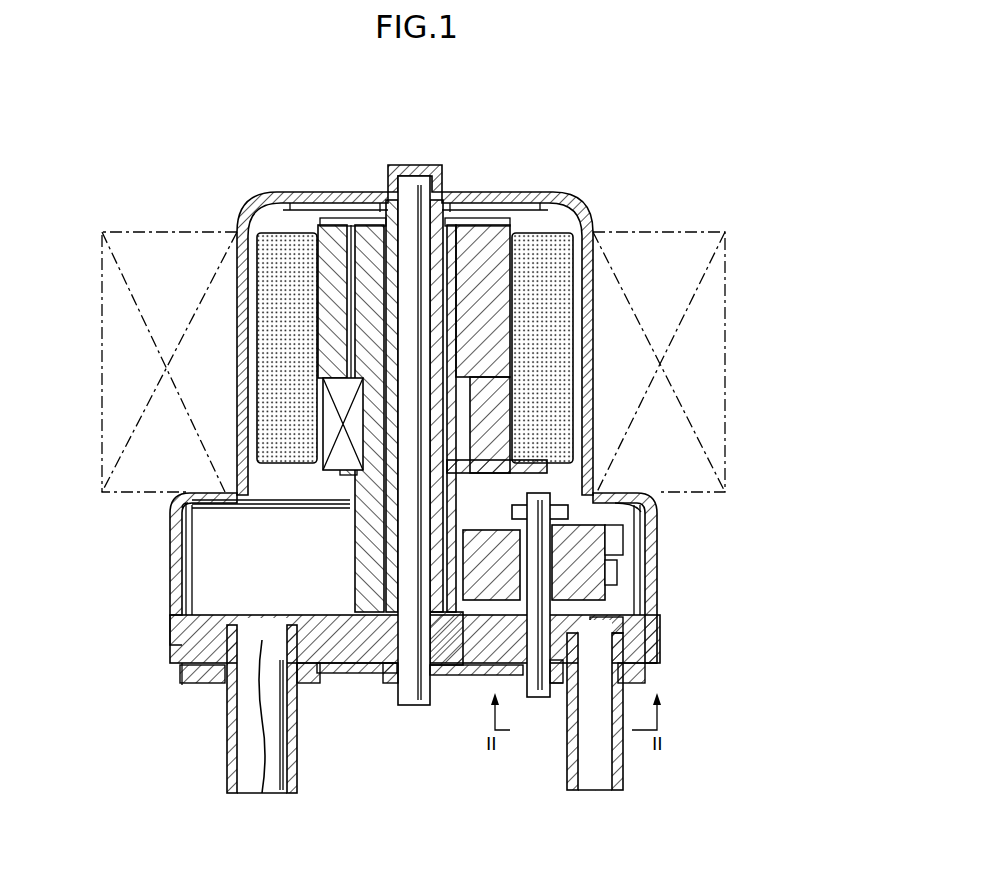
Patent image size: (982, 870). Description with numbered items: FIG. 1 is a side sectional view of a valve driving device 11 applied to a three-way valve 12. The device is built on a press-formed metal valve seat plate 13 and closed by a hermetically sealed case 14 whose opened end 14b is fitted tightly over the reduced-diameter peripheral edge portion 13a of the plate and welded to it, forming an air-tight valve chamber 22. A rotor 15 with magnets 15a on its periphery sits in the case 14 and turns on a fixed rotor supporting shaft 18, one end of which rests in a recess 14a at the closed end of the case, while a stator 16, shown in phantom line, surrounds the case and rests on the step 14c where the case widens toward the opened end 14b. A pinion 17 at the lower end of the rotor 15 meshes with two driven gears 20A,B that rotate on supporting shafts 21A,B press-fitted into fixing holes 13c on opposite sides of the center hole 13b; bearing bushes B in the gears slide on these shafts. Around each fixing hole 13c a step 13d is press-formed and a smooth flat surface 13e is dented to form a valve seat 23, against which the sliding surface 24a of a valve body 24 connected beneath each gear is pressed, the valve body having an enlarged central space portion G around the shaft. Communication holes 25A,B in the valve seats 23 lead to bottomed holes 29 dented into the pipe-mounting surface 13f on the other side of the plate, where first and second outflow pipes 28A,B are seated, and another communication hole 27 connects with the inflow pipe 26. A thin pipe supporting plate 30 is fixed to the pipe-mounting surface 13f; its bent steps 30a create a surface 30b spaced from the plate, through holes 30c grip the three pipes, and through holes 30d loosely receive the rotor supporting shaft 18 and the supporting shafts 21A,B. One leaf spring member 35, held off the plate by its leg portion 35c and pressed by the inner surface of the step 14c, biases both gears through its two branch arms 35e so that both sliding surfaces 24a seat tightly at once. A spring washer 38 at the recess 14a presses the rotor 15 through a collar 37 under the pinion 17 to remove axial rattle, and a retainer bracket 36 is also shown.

The valve driving device 11 is at (600, 207).
The three-way valve 12 is at (150, 668).
The valve seat plate 13 is at (258, 620).
The reduced-diameter peripheral edge portion 13a is at (173, 632).
The center hole 13b is at (383, 670).
The fixing holes 13c is at (557, 700).
The step 13d is at (657, 643).
The smooth flat surface 13e is at (612, 600).
The pipe-mounting surface 13f is at (200, 683).
The hermetically sealed case 14 is at (590, 310).
The recess 14a is at (380, 192).
The opened end 14b is at (173, 613).
The step 14c is at (630, 492).
The rotor 15 is at (513, 277).
The magnets 15a is at (255, 290).
The stator 16 is at (178, 230).
The pinion 17 is at (370, 553).
The rotor supporting shaft 18 is at (355, 378).
The driven gears 20A,B is at (565, 560).
The supporting shafts 21A,B is at (530, 500).
The air-tight valve chamber 22 is at (493, 487).
The valve seat 23 is at (548, 545).
The valve body 24 is at (428, 705).
The sliding surface 24a is at (475, 652).
The communication holes 25A,B is at (620, 612).
The inflow pipe 26 is at (227, 735).
The communication hole 27 is at (360, 607).
The first and second outflow pipes 28A,B is at (623, 773).
The bottomed holes 29 is at (272, 793).
The pipe supporting plate 30 is at (447, 664).
The steps 30a is at (295, 700).
The surface 30b is at (185, 690).
The through holes 30c is at (240, 792).
The through holes 30d is at (395, 668).
The leaf spring member 35 is at (305, 500).
The leg portion 35c is at (190, 597).
The branch arms 35e is at (597, 470).
The retainer bracket 36 is at (352, 207).
The collar 37 is at (310, 600).
The spring washer 38 is at (337, 675).
The bearing bushes B is at (660, 513).
The space portion G is at (657, 663).